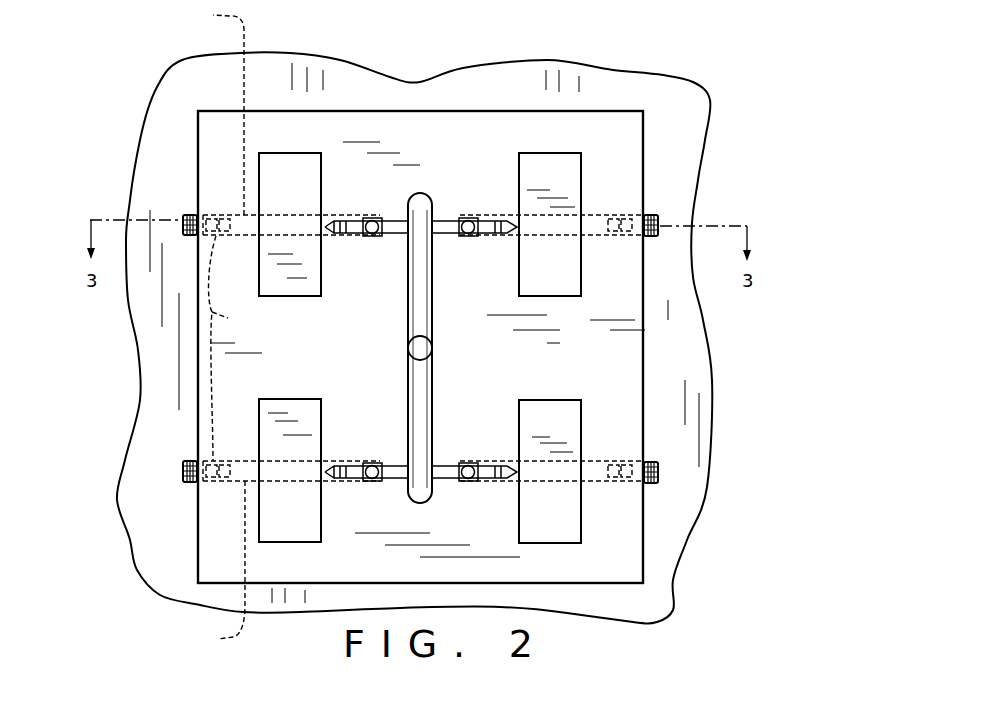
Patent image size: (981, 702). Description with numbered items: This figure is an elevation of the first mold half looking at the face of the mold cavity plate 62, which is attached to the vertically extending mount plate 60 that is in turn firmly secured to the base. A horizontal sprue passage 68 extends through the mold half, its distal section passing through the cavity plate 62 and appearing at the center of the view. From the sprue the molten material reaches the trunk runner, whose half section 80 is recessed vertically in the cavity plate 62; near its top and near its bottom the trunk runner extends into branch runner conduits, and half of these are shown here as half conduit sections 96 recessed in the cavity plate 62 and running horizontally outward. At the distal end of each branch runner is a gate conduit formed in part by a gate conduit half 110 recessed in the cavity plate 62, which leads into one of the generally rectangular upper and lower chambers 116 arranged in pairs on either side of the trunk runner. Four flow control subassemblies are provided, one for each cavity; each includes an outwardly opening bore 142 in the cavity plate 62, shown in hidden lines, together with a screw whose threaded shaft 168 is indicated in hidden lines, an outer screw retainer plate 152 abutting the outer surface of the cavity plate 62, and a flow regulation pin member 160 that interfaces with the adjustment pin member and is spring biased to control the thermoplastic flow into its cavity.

The mount plate 60 is at (183, 91).
The mold cavity plate 62 is at (618, 138).
The sprue passage 68 is at (473, 349).
The half section of trunk runner conduit 80 is at (410, 192).
The half conduit section of branch runner 96 is at (443, 222).
The gate conduit half 110 is at (330, 237).
The chamber 116 is at (280, 172).
The outwardly opening bore 142 is at (409, 327).
The outer screw retainer plate 152 is at (653, 214).
The flow regulation pin member 160 is at (371, 218).
The threaded shaft 168 is at (240, 348).